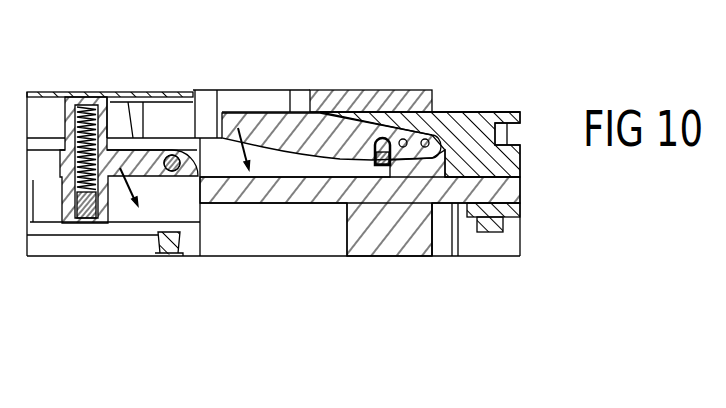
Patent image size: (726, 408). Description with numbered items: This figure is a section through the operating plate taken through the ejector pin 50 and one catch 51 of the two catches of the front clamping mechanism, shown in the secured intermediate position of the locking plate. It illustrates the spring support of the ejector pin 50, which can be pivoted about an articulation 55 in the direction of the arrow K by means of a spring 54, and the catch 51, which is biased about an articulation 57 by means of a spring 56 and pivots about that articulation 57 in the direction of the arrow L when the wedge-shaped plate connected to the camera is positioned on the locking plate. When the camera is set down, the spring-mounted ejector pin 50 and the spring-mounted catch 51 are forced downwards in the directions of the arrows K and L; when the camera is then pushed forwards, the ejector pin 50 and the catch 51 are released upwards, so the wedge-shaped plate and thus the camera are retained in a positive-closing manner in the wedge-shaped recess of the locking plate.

The ejector pin 50 is at (122, 180).
The catch 51 is at (312, 130).
The spring 54 is at (58, 97).
The articulation 55 is at (175, 158).
The spring 56 is at (390, 145).
The articulation 57 is at (422, 177).
The arrow K is at (128, 207).
The arrow L is at (238, 128).